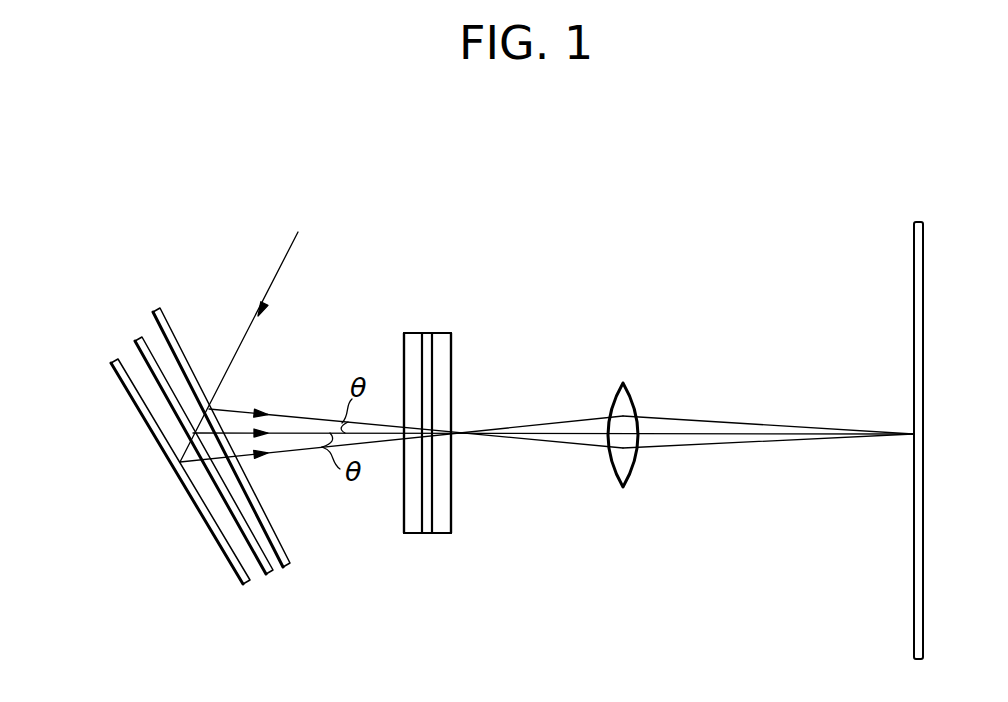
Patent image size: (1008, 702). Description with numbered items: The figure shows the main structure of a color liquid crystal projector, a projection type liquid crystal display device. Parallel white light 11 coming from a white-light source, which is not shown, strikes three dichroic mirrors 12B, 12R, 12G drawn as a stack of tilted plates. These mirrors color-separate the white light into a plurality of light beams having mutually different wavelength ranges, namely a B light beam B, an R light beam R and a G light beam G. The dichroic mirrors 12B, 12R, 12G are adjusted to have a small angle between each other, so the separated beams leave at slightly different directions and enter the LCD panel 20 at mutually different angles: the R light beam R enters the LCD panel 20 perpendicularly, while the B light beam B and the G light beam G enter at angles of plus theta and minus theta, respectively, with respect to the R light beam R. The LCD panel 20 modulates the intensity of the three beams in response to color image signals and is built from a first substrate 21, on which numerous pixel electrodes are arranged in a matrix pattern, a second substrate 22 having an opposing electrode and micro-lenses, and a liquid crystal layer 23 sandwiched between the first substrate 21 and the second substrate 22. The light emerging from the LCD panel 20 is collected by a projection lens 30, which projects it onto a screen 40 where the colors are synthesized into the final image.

The parallel white light 11 is at (288, 252).
The dichroic mirror 12B is at (157, 307).
The dichroic mirror 12R is at (137, 336).
The dichroic mirror 12G is at (112, 360).
The B light beam B is at (238, 408).
The R light beam R is at (292, 432).
The G light beam G is at (279, 455).
The LCD panel 20 is at (444, 500).
The first substrate 21 is at (483, 475).
The second substrate 22 is at (413, 535).
The liquid crystal layer 23 is at (426, 535).
The projection lens 30 is at (630, 478).
The screen 40 is at (911, 594).